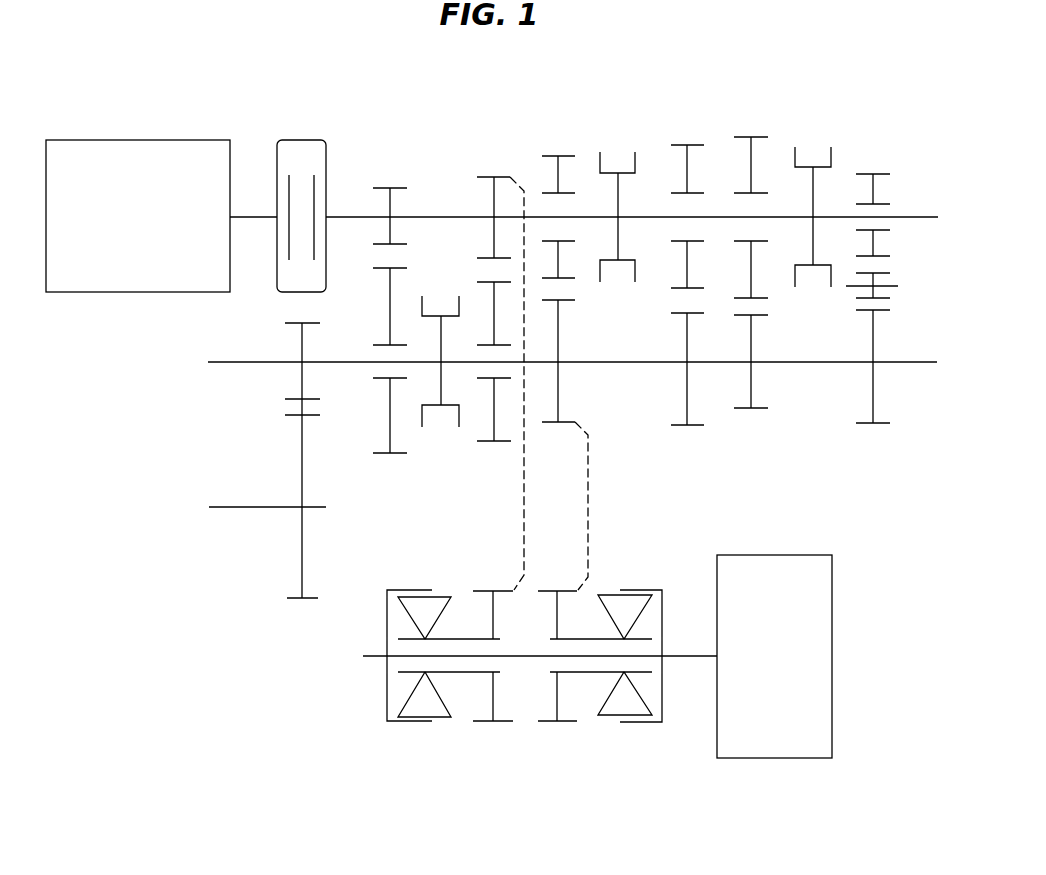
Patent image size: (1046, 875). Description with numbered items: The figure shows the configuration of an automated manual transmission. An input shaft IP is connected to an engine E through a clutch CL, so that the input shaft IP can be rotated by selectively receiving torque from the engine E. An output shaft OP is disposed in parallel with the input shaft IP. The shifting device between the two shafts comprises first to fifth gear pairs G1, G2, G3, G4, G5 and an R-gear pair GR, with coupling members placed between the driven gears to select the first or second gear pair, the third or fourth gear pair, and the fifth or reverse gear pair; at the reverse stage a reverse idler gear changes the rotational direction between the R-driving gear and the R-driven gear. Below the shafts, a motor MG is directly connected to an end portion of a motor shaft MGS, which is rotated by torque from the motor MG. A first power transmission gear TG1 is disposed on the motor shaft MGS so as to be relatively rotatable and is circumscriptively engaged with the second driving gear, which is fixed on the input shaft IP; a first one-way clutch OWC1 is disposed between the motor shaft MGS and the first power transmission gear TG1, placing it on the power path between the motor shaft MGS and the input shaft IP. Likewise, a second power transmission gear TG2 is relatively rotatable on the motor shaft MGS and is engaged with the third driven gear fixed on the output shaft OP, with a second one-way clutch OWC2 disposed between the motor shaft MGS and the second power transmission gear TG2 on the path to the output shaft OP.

The engine E is at (138, 216).
The clutch CL is at (302, 139).
The input shaft IP is at (917, 215).
The output shaft OP is at (917, 360).
The first gear pair G1 is at (390, 307).
The second gear pair G2 is at (494, 293).
The third gear pair G3 is at (558, 276).
The fourth gear pair G4 is at (687, 271).
The fifth gear pair G5 is at (751, 259).
The R-gear pair GR is at (872, 285).
The first one-way clutch OWC1 is at (440, 718).
The second one-way clutch OWC2 is at (613, 721).
The first power transmission gear TG1 is at (502, 722).
The second power transmission gear TG2 is at (565, 722).
The motor shaft MGS is at (682, 658).
The motor MG is at (774, 656).